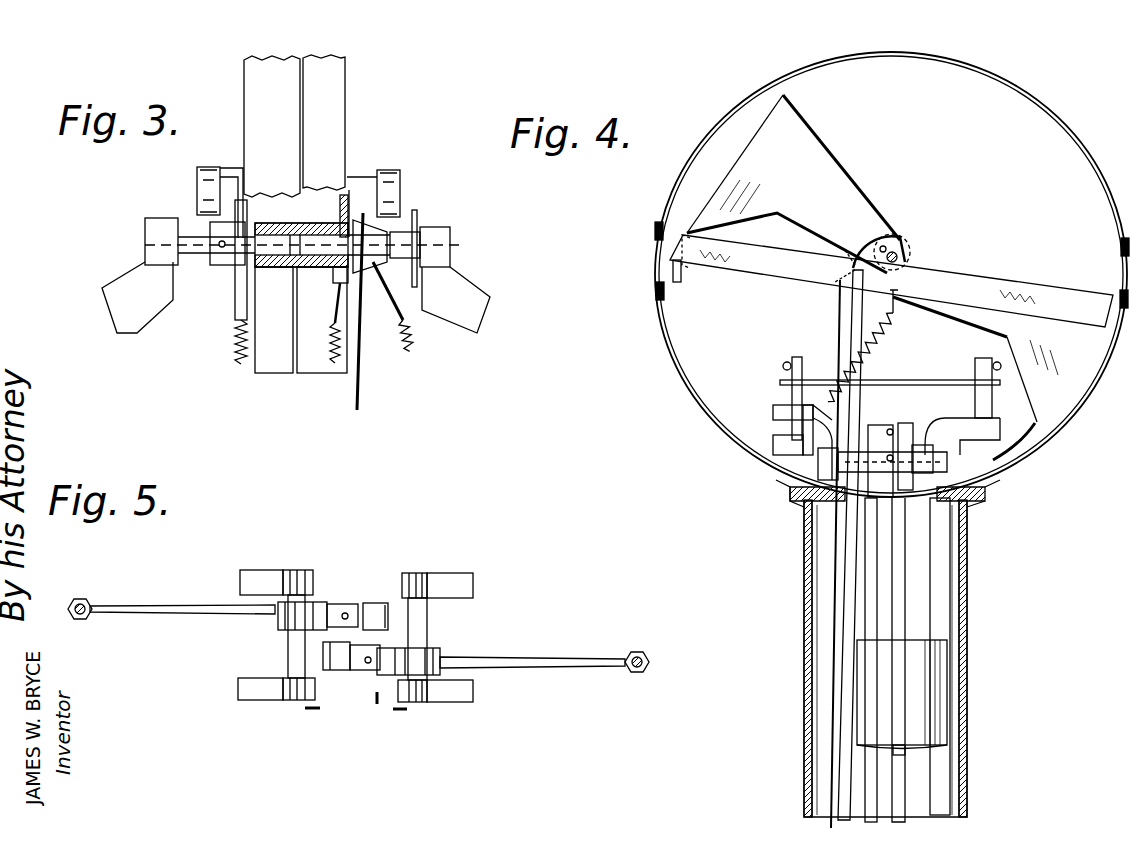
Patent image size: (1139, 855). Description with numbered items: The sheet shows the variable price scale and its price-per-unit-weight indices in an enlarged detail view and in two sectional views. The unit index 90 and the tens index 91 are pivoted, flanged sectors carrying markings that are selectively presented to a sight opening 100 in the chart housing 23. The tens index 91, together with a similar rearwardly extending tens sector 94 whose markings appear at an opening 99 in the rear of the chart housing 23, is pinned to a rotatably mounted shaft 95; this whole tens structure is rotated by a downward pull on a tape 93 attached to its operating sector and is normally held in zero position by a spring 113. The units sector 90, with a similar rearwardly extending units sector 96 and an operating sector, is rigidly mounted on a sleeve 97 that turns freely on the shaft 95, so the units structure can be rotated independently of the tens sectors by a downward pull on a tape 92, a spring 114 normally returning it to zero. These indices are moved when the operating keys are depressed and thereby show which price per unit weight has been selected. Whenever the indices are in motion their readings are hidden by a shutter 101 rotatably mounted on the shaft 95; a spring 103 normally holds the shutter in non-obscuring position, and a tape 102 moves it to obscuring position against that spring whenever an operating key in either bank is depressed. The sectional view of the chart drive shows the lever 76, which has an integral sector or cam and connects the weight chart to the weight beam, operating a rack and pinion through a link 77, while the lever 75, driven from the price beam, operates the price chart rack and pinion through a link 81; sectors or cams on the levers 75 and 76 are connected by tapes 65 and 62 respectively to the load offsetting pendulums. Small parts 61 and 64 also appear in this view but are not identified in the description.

In FIG. 4, the chart housing 23 is at (682, 186).
In FIG. 5, the block 61 is at (355, 600).
In FIG. 5, the tape 62 is at (390, 605).
In FIG. 5, the pivot block 64 is at (356, 670).
In FIG. 5, the tape 65 is at (322, 658).
In FIG. 5, the lever 75 is at (533, 664).
In FIG. 5, the lever 76 is at (205, 614).
In FIG. 5, the link 77 is at (86, 620).
In FIG. 5, the link 81 is at (650, 658).
In FIG. 3, the units index 90 is at (345, 82).
In FIG. 4, the units index 90 is at (793, 184).
In FIG. 3, the tens index 91 is at (248, 93).
In FIG. 3, the tape 92 is at (402, 197).
In FIG. 5, the tape 92 is at (405, 711).
In FIG. 4, the tape 92 is at (842, 526).
In FIG. 3, the tape 93 is at (197, 186).
In FIG. 5, the tape 93 is at (312, 711).
In FIG. 3, the rearwardly extending tens sector 94 is at (318, 373).
In FIG. 4, the rearwardly extending tens sector 94 is at (977, 378).
In FIG. 3, the shaft 95 is at (212, 256).
In FIG. 4, the shaft 95 is at (905, 262).
In FIG. 3, the rearwardly extending units sector 96 is at (275, 373).
In FIG. 3, the sleeve 97 is at (305, 230).
In FIG. 4, the rear opening 99 is at (1122, 268).
In FIG. 4, the sight opening 100 is at (657, 277).
In FIG. 4, the shutter 101 is at (702, 262).
In FIG. 3, the tape 102 is at (360, 403).
In FIG. 5, the tape 102 is at (378, 706).
In FIG. 4, the tape 102 is at (852, 560).
In FIG. 3, the spring 103 is at (418, 345).
In FIG. 4, the spring 103 is at (900, 339).
In FIG. 3, the spring 113 is at (233, 345).
In FIG. 3, the spring 114 is at (340, 352).